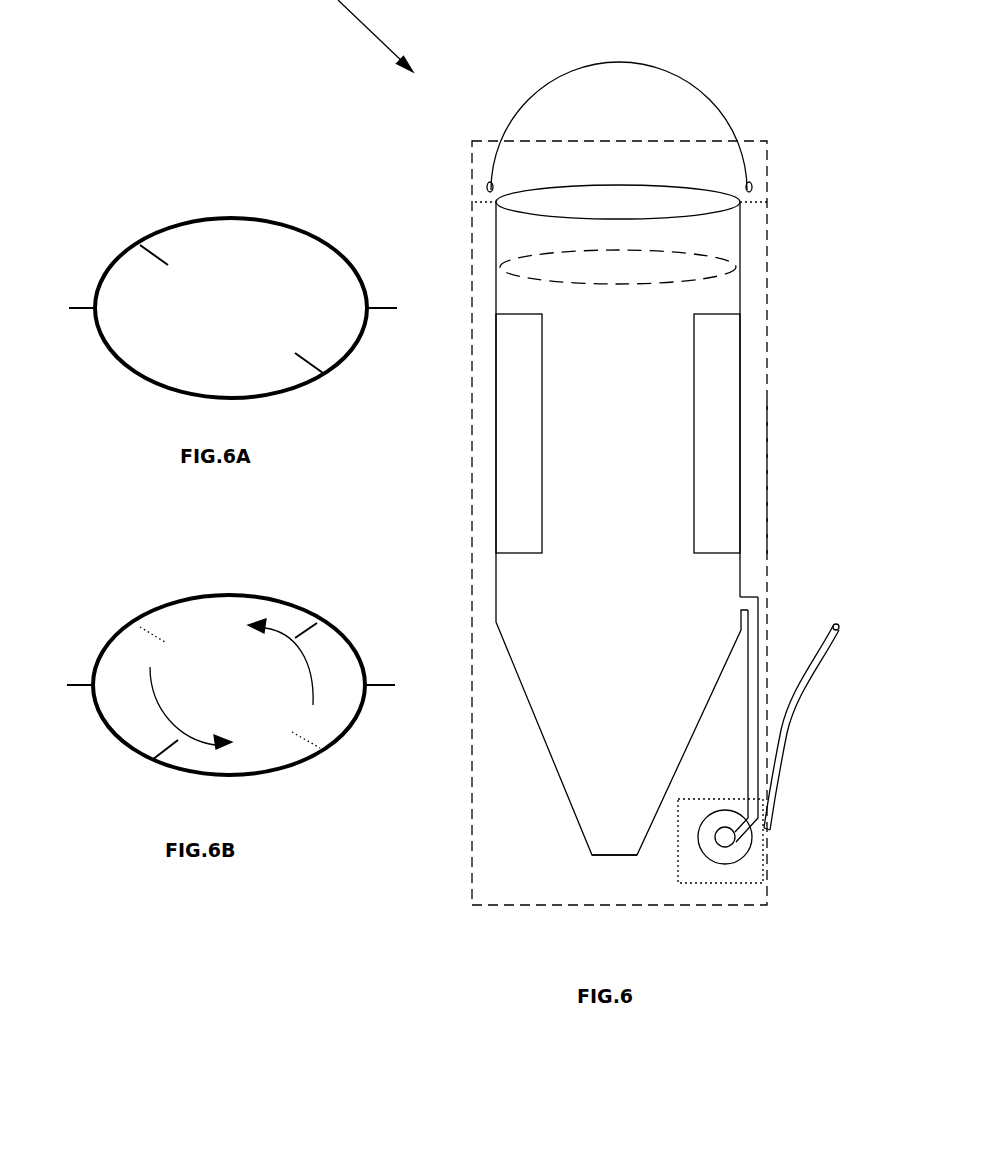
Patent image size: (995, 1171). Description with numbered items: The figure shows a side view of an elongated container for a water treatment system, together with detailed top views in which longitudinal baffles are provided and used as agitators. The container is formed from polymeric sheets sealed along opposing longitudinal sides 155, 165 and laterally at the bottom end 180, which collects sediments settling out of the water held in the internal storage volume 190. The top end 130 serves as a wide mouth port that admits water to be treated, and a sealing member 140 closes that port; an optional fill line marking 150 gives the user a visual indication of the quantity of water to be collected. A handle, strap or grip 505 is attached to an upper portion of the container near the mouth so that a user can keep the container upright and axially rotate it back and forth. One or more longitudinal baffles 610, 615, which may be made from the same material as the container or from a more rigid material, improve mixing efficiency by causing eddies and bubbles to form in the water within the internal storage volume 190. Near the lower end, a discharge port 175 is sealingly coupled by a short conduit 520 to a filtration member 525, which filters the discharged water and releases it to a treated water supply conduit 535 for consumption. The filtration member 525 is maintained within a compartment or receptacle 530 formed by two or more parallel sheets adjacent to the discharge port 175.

In FIG. 6, the top end 130 is at (572, 141).
In FIG. 6, the sealing member 140 is at (475, 202).
In FIG. 6, the fill line marking 150 is at (500, 268).
In FIG. 6, the longitudinal side 155 is at (471, 851).
In FIG. 6A, the longitudinal side 155 is at (85, 308).
In FIG. 6B, the longitudinal side 155 is at (84, 686).
In FIG. 6, the longitudinal side 165 is at (767, 485).
In FIG. 6A, the longitudinal side 165 is at (380, 311).
In FIG. 6B, the longitudinal side 165 is at (380, 688).
In FIG. 6, the discharge port 175 is at (745, 597).
In FIG. 6, the bottom end 180 is at (618, 855).
In FIG. 6, the internal storage volume 190 is at (645, 586).
In FIG. 6, the handle 505 is at (618, 62).
In FIG. 6, the conduit 520 is at (757, 650).
In FIG. 6, the filtration member 525 is at (722, 864).
In FIG. 6, the receptacle 530 is at (735, 883).
In FIG. 6, the treated water supply conduit 535 is at (792, 698).
In FIG. 6, the longitudinal baffle 610 is at (525, 433).
In FIG. 6A, the longitudinal baffle 610 is at (166, 262).
In FIG. 6B, the longitudinal baffle 610 is at (157, 753).
In FIG. 6, the longitudinal baffle 615 is at (725, 406).
In FIG. 6A, the longitudinal baffle 615 is at (308, 372).
In FIG. 6B, the longitudinal baffle 615 is at (307, 632).